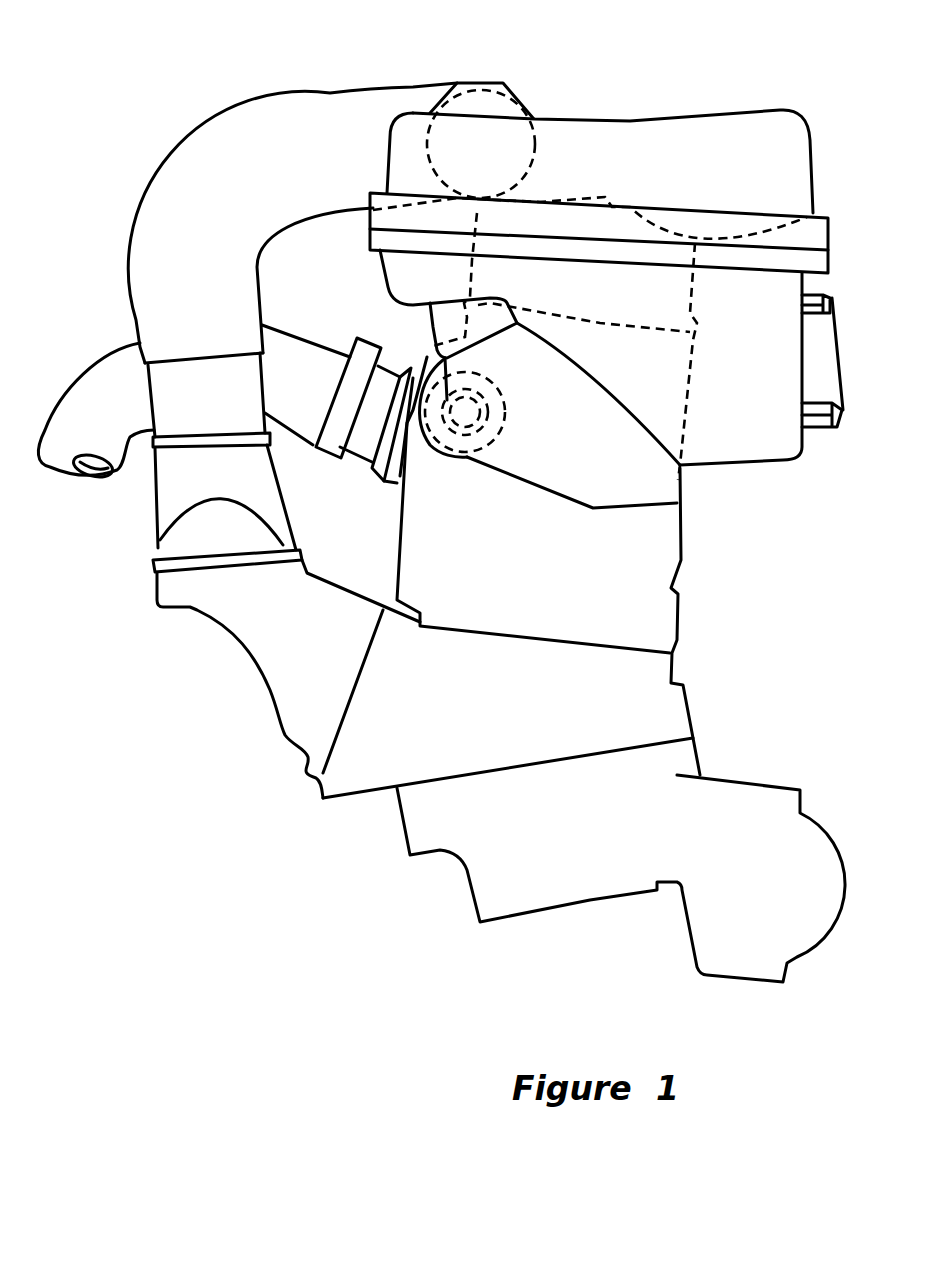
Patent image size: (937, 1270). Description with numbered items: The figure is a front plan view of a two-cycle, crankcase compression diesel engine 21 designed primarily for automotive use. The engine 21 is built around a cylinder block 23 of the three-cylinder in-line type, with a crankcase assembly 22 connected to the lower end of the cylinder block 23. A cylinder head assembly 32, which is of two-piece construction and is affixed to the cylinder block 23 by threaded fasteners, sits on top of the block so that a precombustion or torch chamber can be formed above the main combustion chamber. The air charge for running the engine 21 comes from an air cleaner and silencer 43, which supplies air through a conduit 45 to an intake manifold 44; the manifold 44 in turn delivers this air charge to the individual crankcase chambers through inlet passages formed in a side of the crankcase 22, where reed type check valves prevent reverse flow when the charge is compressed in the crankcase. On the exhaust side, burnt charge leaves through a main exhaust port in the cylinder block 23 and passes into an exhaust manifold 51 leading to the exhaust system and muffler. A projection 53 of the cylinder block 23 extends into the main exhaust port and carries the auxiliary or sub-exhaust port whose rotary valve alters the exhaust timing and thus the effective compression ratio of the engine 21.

The engine 21 is at (750, 551).
The crankcase assembly 22 is at (700, 773).
The cylinder block 23 is at (657, 557).
The cylinder head assembly 32 is at (813, 213).
The air cleaner and silencer 43 is at (700, 123).
The intake manifold 44 is at (270, 660).
The conduit 45 is at (250, 130).
The exhaust manifold 51 is at (277, 407).
The projection 53 is at (480, 430).